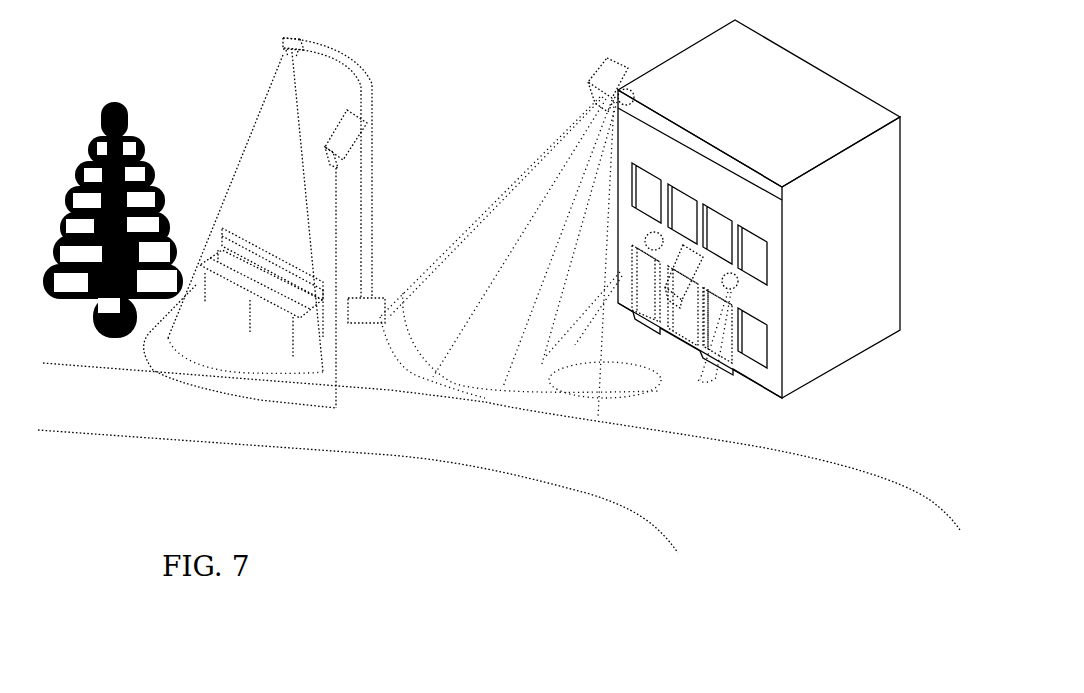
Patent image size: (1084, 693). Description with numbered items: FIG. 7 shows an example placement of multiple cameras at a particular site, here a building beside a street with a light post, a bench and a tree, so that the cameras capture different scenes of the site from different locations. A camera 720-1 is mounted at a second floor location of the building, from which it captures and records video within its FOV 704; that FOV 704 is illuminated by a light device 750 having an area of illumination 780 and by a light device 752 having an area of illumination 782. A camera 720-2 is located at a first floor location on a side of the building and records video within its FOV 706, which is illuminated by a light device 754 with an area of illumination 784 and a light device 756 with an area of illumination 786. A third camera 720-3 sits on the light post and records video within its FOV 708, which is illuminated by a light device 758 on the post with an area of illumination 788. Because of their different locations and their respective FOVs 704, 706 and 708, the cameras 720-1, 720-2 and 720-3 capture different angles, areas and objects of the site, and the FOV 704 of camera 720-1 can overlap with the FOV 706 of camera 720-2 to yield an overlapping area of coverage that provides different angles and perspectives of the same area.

The FOV 704 is at (552, 143).
The FOV 706 is at (605, 367).
The FOV 708 is at (193, 386).
The camera 720-1 is at (600, 68).
The camera 720-2 is at (674, 275).
The camera 720-3 is at (367, 135).
The light device 750 is at (634, 98).
The light device 752 is at (630, 117).
The light device 754 is at (648, 238).
The light device 756 is at (738, 289).
The light device 758 is at (292, 38).
The area of illumination 780 is at (498, 248).
The area of illumination 782 is at (597, 285).
The area of illumination 784 is at (584, 314).
The area of illumination 786 is at (706, 382).
The area of illumination 788 is at (240, 152).